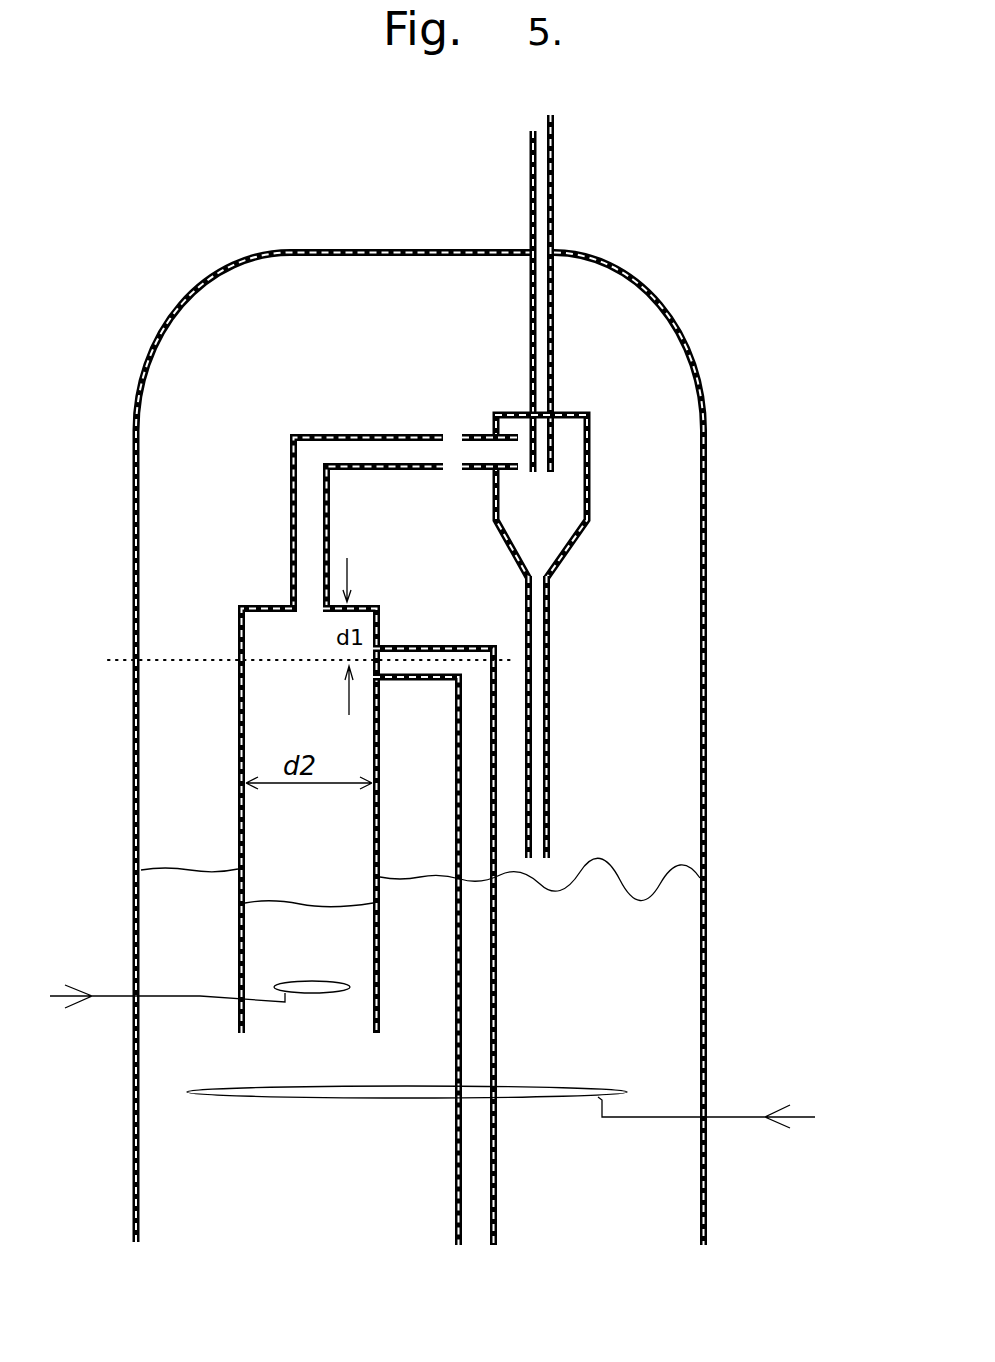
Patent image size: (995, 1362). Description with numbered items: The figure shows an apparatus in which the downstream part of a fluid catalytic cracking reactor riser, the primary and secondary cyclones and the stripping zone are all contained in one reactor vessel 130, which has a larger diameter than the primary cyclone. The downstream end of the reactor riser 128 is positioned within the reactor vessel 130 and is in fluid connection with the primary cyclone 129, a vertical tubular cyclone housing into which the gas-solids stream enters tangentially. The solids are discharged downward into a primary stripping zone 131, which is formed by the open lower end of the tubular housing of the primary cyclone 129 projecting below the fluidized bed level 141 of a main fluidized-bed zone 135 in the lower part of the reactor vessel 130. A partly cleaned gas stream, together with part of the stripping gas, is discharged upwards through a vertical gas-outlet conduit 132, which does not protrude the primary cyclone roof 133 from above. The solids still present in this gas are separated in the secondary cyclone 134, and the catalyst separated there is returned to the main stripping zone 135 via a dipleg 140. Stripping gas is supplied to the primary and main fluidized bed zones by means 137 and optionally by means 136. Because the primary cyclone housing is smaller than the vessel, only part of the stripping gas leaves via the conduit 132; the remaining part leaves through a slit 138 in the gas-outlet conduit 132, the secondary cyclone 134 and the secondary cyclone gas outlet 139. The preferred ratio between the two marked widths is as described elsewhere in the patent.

The reactor riser 128 is at (496, 1130).
The primary cyclone 129 is at (240, 828).
The reactor vessel 130 is at (707, 757).
The primary stripping zone 131 is at (327, 963).
The gas-outlet conduit 132 is at (330, 494).
The primary cyclone roof 133 is at (240, 605).
The secondary cyclone 134 is at (590, 493).
The main fluidized-bed zone 135 is at (596, 994).
The stripping gas supply means 136 is at (318, 996).
The stripping gas supply means 137 is at (325, 1100).
The slit 138 is at (450, 448).
The secondary cyclone gas outlet 139 is at (555, 138).
The dipleg 140 is at (550, 697).
The fluidized bed level 141 is at (613, 878).